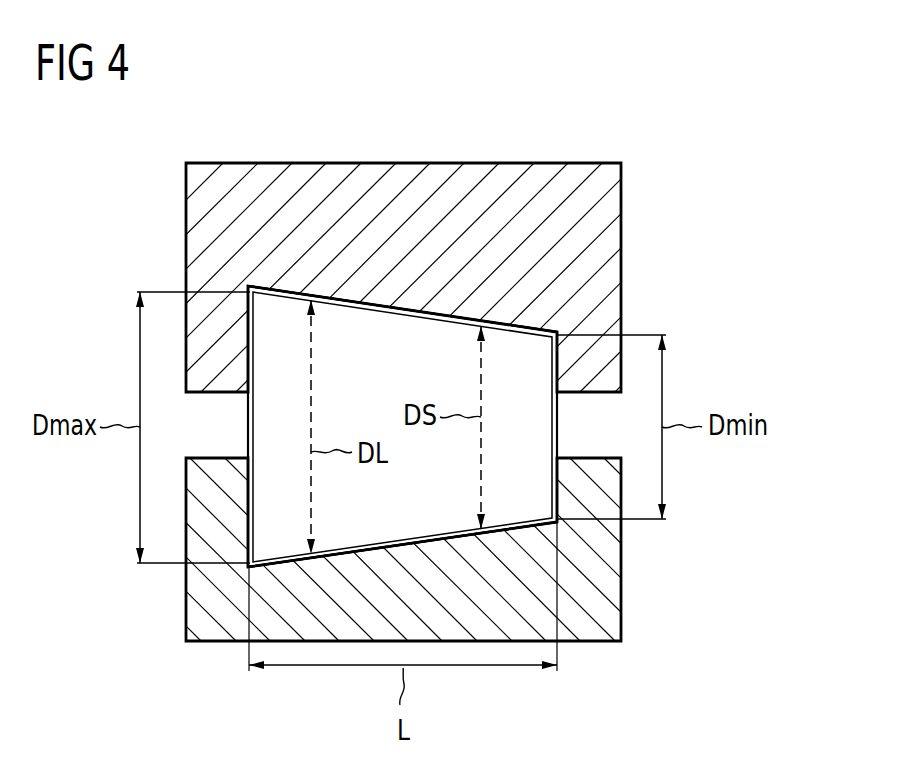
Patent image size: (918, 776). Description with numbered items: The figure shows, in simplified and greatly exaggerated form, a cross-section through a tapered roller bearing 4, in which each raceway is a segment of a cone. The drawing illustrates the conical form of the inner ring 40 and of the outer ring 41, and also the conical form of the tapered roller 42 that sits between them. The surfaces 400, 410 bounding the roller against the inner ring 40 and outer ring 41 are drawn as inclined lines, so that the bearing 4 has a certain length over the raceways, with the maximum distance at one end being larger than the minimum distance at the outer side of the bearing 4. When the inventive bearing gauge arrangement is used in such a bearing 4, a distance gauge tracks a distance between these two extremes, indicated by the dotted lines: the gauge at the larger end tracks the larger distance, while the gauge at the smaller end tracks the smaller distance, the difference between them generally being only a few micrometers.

The tapered roller bearing 4 is at (568, 116).
The inner ring 40 is at (600, 586).
The outer ring 41 is at (600, 246).
The tapered roller 42 is at (532, 432).
The lower inner surface 400 is at (407, 541).
The upper inner surface 410 is at (385, 309).